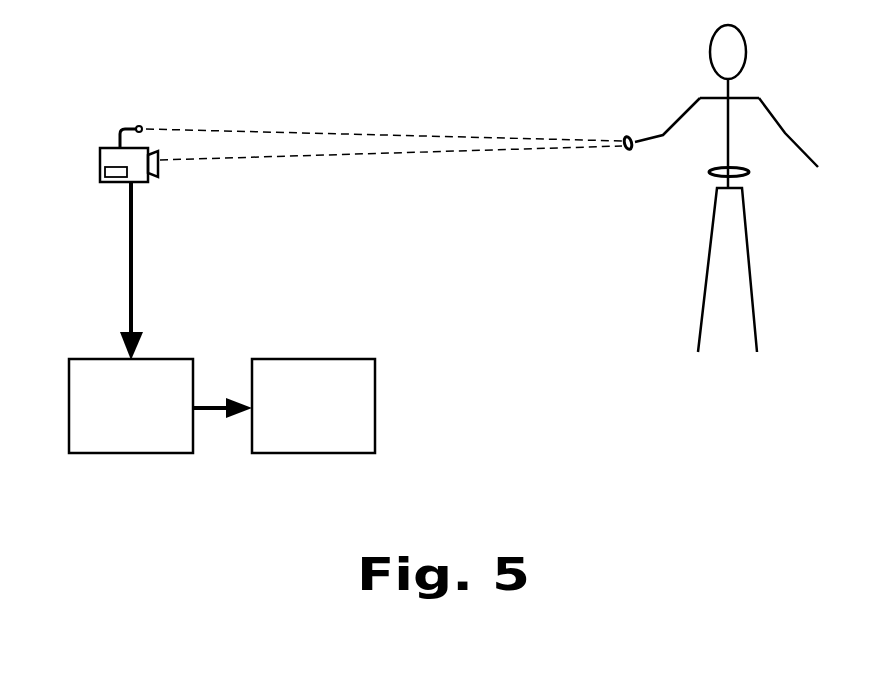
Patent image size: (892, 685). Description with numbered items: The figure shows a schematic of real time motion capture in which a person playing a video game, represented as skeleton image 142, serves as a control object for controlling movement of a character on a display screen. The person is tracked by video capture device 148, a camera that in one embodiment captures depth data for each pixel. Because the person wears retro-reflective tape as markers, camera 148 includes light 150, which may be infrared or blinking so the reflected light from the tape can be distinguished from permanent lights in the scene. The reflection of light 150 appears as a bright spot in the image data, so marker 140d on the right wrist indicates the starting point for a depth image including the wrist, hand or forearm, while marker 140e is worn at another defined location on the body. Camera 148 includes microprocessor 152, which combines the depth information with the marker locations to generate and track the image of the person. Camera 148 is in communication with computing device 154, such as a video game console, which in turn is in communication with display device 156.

The skeleton image 142 is at (720, 27).
The marker 140d is at (624, 137).
The waist-worn sensor 140e is at (748, 172).
The video capture device 148 is at (100, 157).
The light 150 is at (139, 125).
The microprocessor 152 is at (104, 174).
The computing device 154 is at (178, 359).
The display device 156 is at (361, 359).